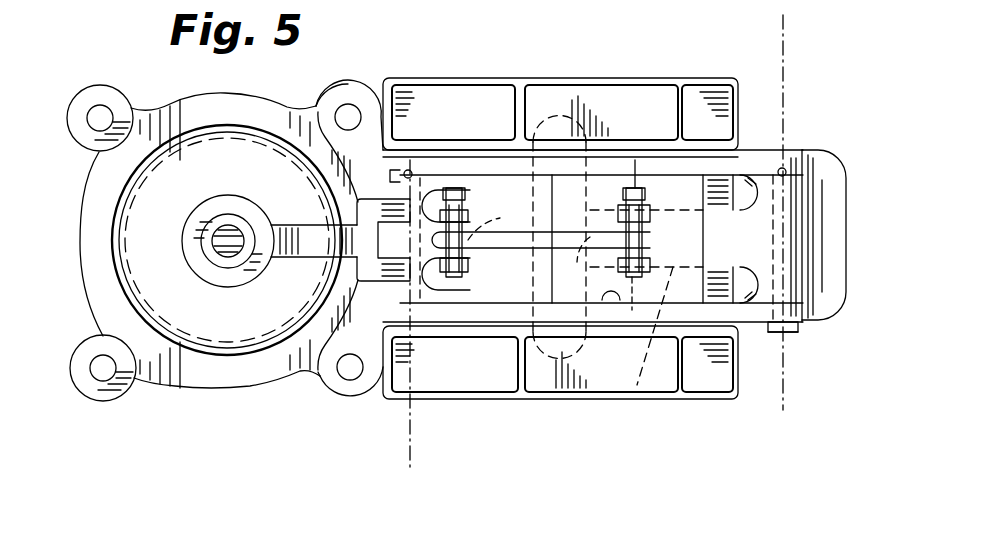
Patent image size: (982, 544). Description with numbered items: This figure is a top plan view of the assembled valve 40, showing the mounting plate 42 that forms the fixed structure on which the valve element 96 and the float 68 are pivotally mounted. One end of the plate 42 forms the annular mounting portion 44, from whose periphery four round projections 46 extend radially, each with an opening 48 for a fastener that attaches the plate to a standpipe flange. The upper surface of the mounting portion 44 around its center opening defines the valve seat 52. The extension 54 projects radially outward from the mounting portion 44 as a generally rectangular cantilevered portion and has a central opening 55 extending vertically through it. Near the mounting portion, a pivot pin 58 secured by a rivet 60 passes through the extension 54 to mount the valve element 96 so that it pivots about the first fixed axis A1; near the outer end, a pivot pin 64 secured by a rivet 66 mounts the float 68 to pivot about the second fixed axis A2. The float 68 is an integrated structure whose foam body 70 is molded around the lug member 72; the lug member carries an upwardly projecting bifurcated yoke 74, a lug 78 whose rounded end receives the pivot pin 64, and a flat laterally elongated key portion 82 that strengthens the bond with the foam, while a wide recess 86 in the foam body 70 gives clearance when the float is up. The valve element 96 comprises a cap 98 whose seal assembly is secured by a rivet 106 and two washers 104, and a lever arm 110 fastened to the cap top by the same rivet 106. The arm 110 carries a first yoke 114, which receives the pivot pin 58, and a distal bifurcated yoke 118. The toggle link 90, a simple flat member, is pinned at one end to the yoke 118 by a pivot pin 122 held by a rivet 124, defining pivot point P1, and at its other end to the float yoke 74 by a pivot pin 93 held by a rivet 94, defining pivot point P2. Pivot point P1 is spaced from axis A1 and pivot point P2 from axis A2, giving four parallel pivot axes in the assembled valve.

The valve 40 is at (291, 418).
The mounting plate 42 is at (751, 146).
The annular mounting portion 44 is at (195, 370).
The round projections 46 is at (98, 95).
The opening 48 is at (103, 118).
The valve seat 52 is at (134, 216).
The extension 54 is at (832, 148).
The central opening 55 is at (602, 300).
The pivot pin 58 is at (443, 292).
The rivet 60 is at (410, 170).
The pivot pin 64 is at (776, 338).
The rivet 66 is at (785, 169).
The float 68 is at (468, 78).
The foam body 70 is at (541, 98).
The lug member 72 is at (560, 362).
The bifurcated yoke 74 is at (644, 186).
The lug 78 is at (829, 322).
The key portion 82 is at (547, 362).
The wide recess 86 is at (616, 148).
The toggle link 90 is at (512, 240).
The pivot pin 93 is at (655, 232).
The rivet 94 is at (618, 206).
The valve element 96 is at (230, 362).
The cap 98 is at (248, 176).
The washers 104 is at (212, 250).
The rivet 106 is at (225, 258).
The lever arm 110 is at (278, 224).
The first yoke 114 is at (356, 280).
The bifurcated yoke 118 is at (470, 213).
The pivot pin 122 is at (466, 278).
The rivet 124 is at (464, 195).
The pivot point P1 is at (496, 221).
The pivot point P2 is at (572, 261).
The first fixed axis A1 is at (410, 470).
The second fixed axis A2 is at (783, 408).